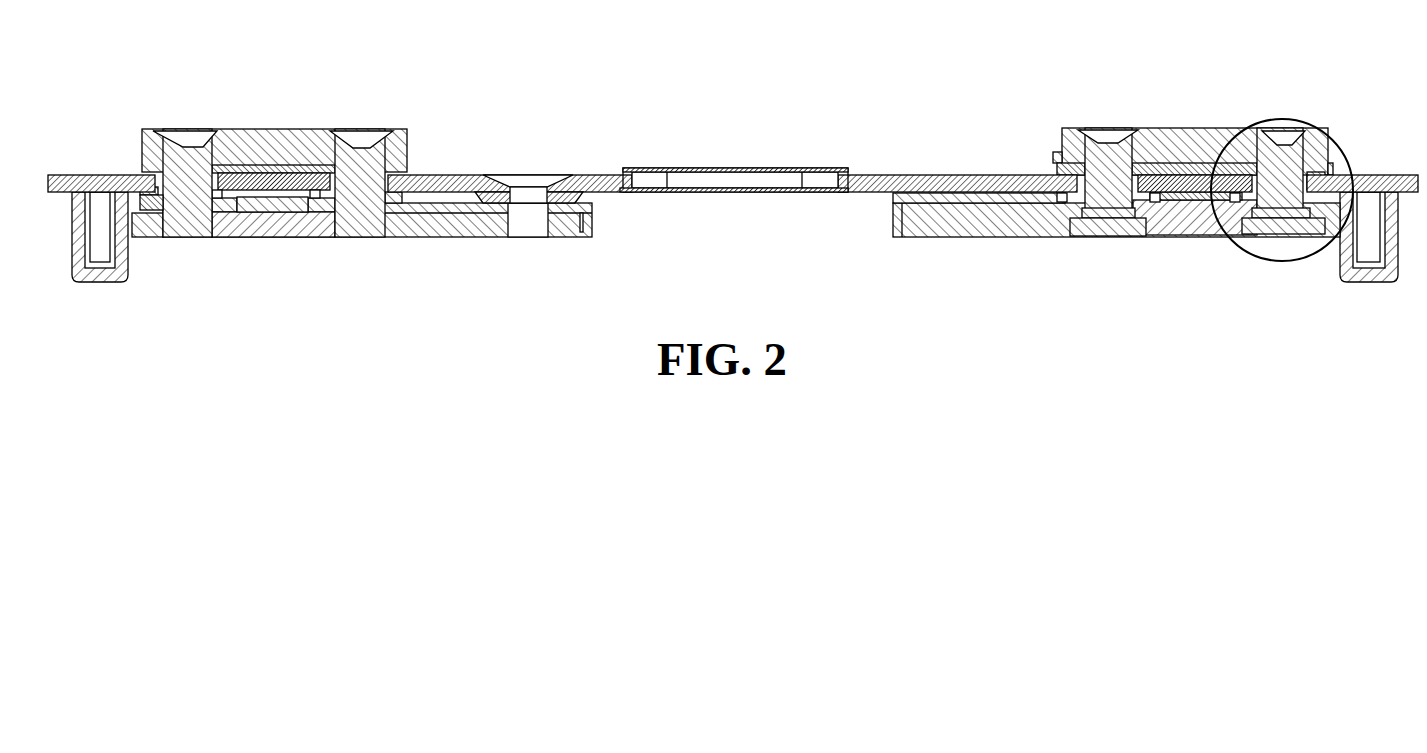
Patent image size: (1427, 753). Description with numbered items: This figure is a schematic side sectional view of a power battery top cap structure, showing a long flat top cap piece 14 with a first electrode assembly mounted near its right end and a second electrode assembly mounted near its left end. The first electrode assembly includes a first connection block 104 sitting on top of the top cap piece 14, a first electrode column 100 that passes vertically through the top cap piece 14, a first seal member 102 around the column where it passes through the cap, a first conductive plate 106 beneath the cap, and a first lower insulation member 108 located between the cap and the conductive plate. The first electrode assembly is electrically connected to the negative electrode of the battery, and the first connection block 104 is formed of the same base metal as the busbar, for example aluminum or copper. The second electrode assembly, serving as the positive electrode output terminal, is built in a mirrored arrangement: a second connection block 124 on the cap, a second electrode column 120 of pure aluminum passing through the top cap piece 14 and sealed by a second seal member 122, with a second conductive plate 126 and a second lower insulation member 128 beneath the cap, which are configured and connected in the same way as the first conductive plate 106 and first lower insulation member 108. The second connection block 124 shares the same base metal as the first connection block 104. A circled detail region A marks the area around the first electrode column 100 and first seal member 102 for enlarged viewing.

The top cap piece 14 is at (903, 175).
The first electrode column 100 is at (1290, 150).
The first seal member 102 is at (1313, 193).
The first connection block 104 is at (1160, 130).
The first conductive plate 106 is at (988, 225).
The first lower insulation member 108 is at (1180, 200).
The second electrode column 120 is at (187, 152).
The second seal member 122 is at (158, 198).
The second connection block 124 is at (278, 137).
The second conductive plate 126 is at (445, 223).
The second lower insulation member 128 is at (270, 210).
The detail region A is at (1277, 260).